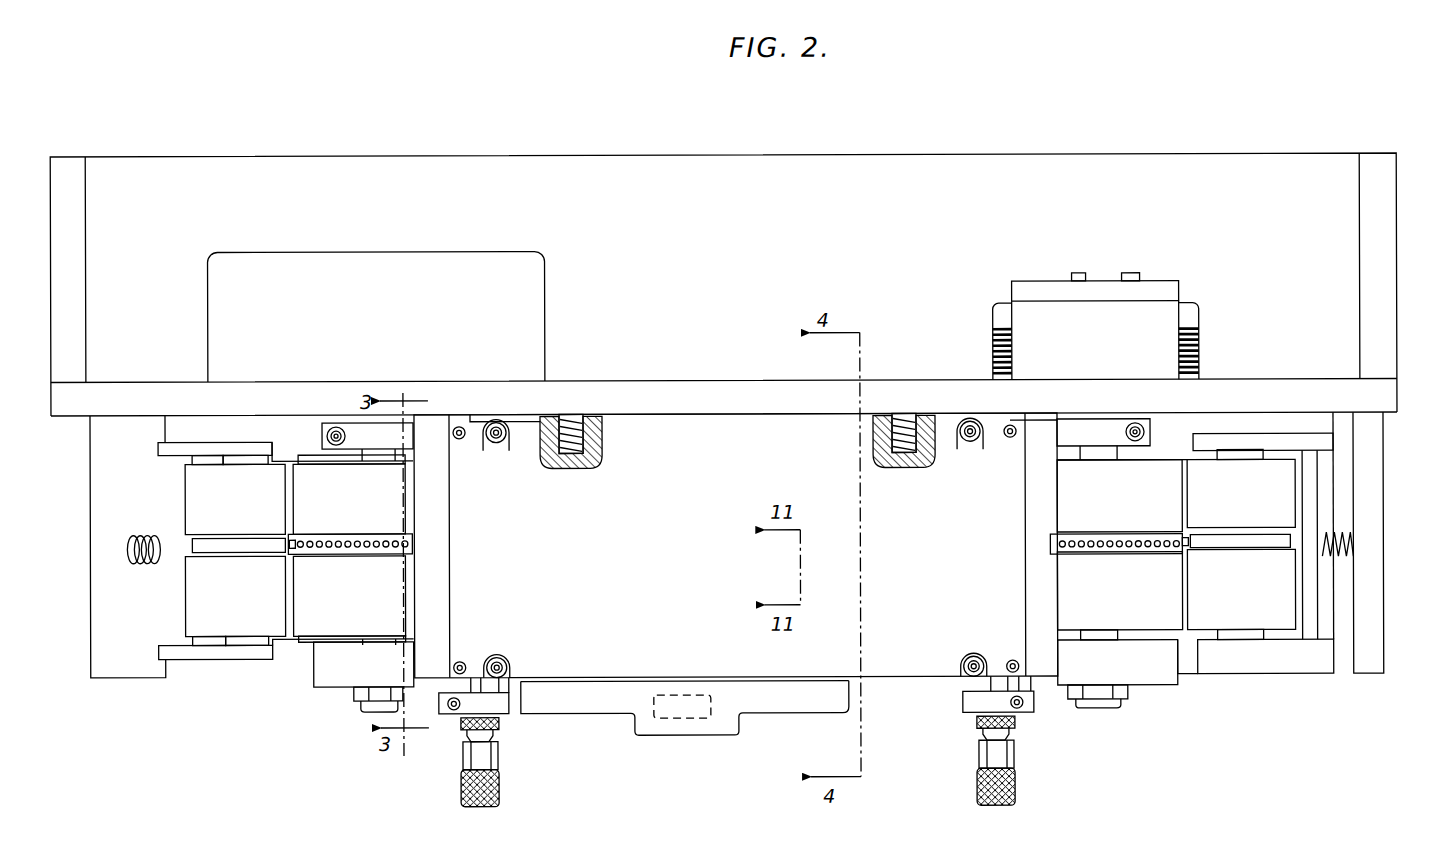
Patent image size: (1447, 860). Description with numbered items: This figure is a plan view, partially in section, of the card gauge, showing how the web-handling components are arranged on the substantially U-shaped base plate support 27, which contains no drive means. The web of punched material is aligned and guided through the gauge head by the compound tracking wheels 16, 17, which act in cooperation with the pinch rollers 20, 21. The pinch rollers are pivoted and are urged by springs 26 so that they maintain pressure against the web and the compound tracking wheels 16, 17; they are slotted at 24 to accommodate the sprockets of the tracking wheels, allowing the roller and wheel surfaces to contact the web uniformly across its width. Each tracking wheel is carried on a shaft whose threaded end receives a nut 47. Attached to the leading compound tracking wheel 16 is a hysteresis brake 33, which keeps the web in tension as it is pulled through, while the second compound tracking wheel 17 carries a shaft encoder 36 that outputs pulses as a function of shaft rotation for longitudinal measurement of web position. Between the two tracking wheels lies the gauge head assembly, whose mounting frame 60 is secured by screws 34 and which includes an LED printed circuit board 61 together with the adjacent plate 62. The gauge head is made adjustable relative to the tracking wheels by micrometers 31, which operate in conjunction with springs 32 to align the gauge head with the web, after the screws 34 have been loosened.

The compound tracking wheel 16 is at (1150, 608).
The compound tracking wheel 17 is at (318, 617).
The pinch roller 20 is at (1272, 614).
The pinch roller 21 is at (222, 620).
The slot 24 is at (192, 548).
The spring 26 is at (138, 540).
The U-shaped base plate support 27 is at (55, 310).
The micrometer 31 is at (460, 790).
The spring 32 is at (572, 414).
The hysteresis brake 33 is at (1159, 282).
The screw 34 is at (498, 444).
The shaft encoder 36 is at (396, 251).
The nut 47 is at (353, 702).
The frame 60 is at (1038, 663).
The LED printed circuit board 61 is at (672, 738).
The plate 62 is at (553, 730).